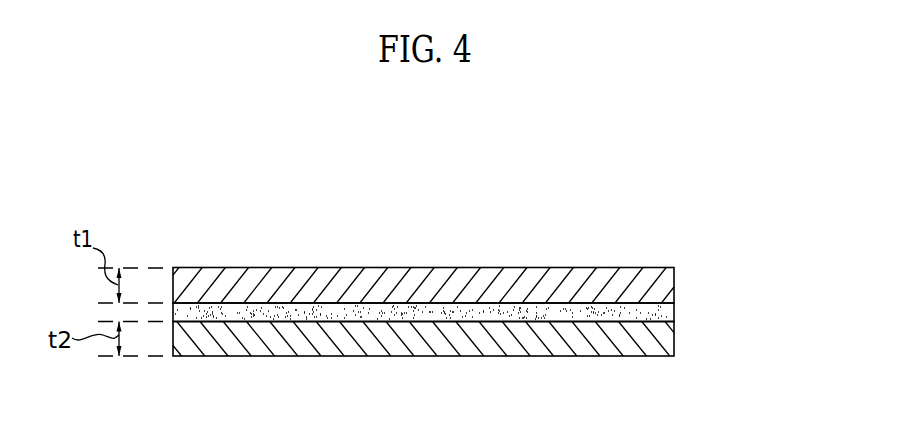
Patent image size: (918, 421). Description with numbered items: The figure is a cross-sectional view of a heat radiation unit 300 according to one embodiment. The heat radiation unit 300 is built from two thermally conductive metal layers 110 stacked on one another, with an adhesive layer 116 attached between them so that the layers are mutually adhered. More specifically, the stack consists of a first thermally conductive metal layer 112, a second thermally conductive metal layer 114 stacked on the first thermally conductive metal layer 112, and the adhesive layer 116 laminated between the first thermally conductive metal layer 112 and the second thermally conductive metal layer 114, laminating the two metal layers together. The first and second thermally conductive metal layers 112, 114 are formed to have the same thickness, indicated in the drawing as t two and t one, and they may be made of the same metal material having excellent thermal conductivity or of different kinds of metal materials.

The heat radiation unit 300 is at (660, 223).
The thermally conductive metal layers 110 is at (755, 277).
The first thermally conductive metal layer 112 is at (663, 287).
The second thermally conductive metal layer 114 is at (663, 341).
The adhesive layer 116 is at (575, 308).